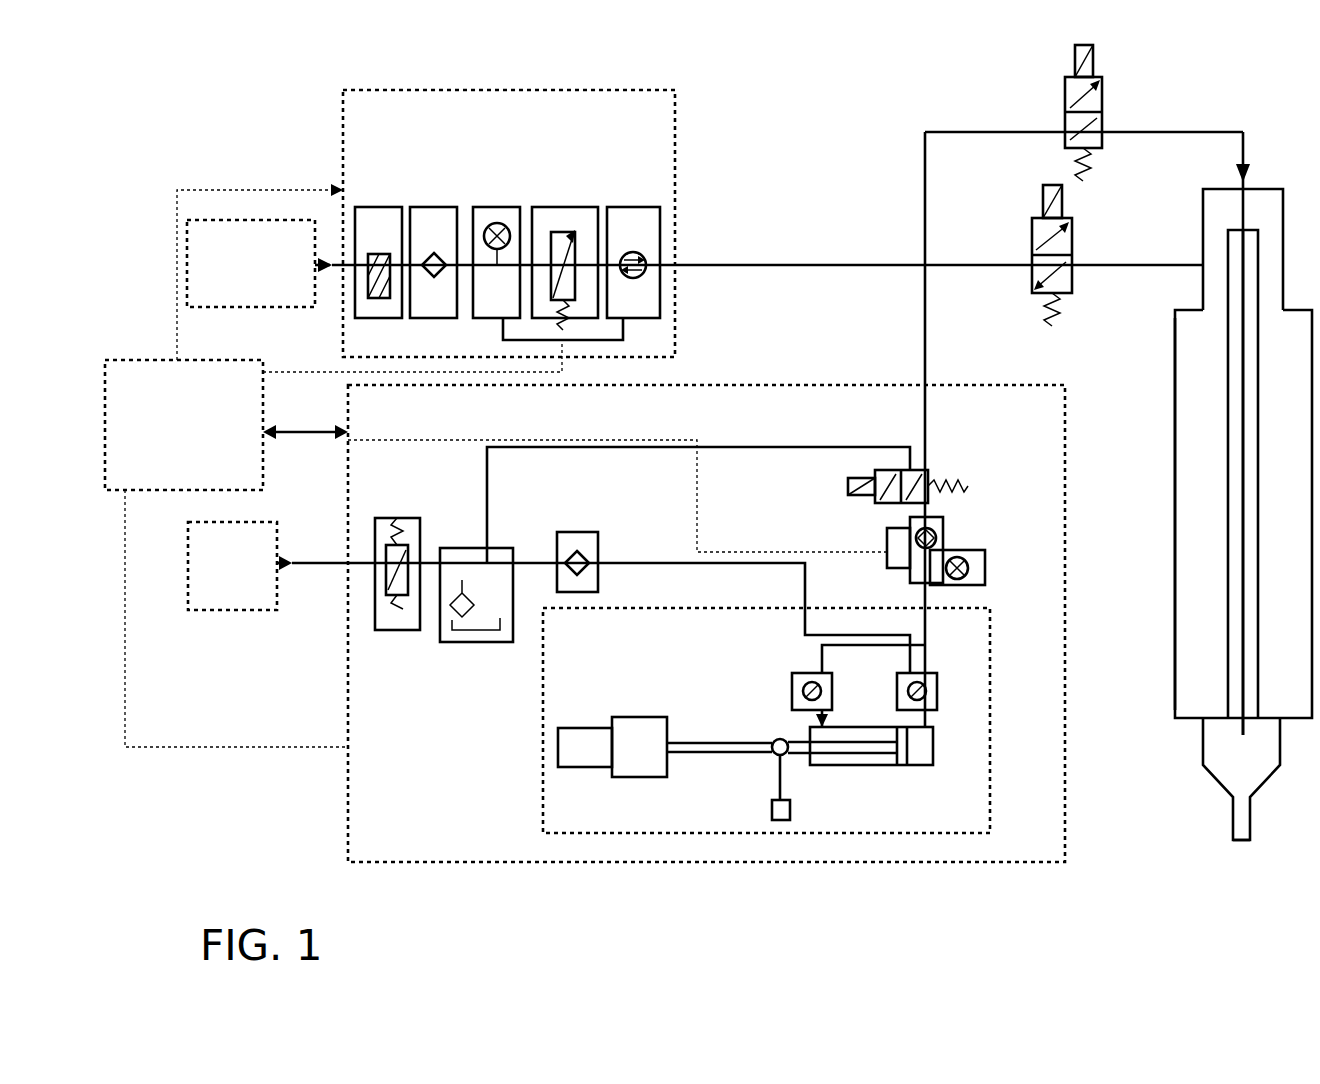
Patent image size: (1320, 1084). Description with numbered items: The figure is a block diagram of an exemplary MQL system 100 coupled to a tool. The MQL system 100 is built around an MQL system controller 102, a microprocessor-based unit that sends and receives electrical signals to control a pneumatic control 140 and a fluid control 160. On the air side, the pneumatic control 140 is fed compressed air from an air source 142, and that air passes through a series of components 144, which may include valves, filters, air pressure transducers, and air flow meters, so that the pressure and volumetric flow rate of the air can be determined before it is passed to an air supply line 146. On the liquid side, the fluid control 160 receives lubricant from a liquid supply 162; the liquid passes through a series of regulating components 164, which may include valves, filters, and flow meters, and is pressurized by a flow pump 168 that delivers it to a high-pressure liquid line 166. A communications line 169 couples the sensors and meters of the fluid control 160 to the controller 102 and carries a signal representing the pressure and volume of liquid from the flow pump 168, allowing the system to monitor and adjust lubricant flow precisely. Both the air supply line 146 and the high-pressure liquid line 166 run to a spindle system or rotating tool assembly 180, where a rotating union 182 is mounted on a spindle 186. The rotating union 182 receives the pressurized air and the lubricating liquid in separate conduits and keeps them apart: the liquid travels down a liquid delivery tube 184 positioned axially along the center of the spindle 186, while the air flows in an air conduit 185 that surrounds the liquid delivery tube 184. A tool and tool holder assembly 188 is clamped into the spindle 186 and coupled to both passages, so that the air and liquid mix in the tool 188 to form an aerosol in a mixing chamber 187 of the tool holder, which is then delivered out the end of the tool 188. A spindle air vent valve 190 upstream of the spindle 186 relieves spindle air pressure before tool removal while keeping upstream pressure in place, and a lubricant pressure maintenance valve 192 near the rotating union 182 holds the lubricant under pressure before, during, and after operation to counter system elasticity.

The MQL system 100 is at (202, 132).
The MQL system controller 102 is at (143, 358).
The pneumatic control 140 is at (509, 202).
The air source 142 is at (243, 307).
The series of components 144 is at (548, 170).
The air supply line 146 is at (855, 264).
The fluid control 160 is at (654, 623).
The liquid supply 162 is at (203, 610).
The regulating components 164 is at (955, 436).
The high-pressure liquid line 166 is at (928, 348).
The flow pump 168 is at (543, 703).
The communications line 169 is at (280, 431).
The rotating tool assembly 180 is at (1160, 354).
The rotating union 182 is at (1203, 213).
The liquid delivery tube 184 is at (1212, 403).
The air conduit 185 is at (1208, 512).
The spindle 186 is at (1174, 598).
The mixing chamber 187 is at (1203, 758).
The tool and tool holder assembly 188 is at (1222, 815).
The spindle air vent valve 190 is at (1032, 232).
The lubricant pressure maintenance valve 192 is at (1102, 103).